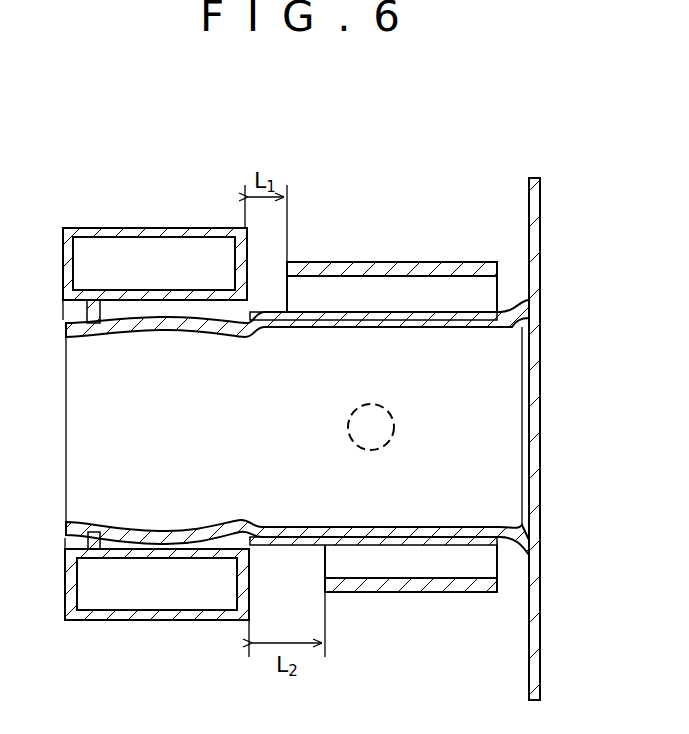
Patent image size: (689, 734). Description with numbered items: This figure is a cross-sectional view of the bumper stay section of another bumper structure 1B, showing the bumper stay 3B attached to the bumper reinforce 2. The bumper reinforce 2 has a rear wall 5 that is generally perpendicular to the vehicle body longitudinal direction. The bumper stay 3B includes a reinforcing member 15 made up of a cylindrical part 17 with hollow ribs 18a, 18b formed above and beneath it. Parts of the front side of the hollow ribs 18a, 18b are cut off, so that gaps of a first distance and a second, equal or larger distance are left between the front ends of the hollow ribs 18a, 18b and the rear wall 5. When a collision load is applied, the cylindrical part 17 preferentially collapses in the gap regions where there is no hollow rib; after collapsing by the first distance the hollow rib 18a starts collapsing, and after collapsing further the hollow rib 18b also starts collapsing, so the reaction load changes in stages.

The tubular body 1B is at (200, 166).
The bumper reinforce 2 is at (134, 225).
The bumper stay 3B is at (388, 167).
The rear wall 5 is at (238, 258).
The reinforcing member 15 is at (416, 236).
The cylindrical part 17 is at (385, 312).
The hollow rib 18a is at (367, 261).
The hollow rib 18b is at (408, 594).